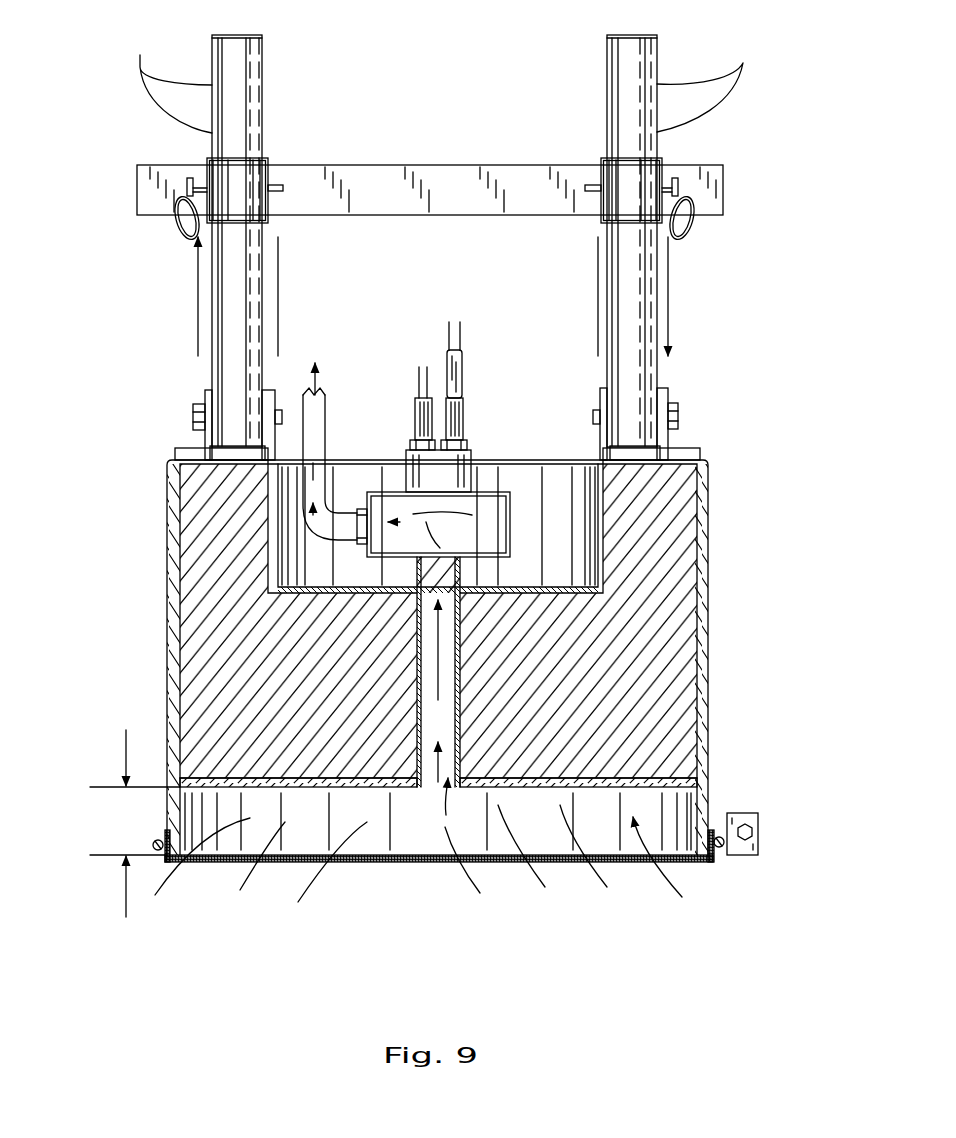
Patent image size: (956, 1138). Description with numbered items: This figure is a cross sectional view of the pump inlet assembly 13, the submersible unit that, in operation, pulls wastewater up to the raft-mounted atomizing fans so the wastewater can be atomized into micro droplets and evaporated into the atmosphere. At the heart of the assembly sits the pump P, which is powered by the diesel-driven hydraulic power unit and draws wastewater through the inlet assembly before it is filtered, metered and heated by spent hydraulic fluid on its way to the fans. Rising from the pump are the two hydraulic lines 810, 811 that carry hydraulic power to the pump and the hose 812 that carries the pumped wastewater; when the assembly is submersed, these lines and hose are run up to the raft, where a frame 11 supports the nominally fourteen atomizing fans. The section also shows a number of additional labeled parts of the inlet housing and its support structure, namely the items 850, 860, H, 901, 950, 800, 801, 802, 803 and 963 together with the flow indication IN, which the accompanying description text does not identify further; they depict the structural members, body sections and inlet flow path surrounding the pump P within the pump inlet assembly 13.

The pump inlet assembly 13 is at (101, 445).
The left support post 850 is at (248, 235).
The right support post 860 is at (548, 43).
The handle height H is at (172, 78).
The frame 11 is at (382, 205).
The locking ring pin 901 is at (190, 178).
The vertical motion direction 950 is at (198, 305).
The vessel housing 800 is at (708, 500).
The insulating body 801 is at (652, 632).
The bottom inlet plate 802 is at (552, 858).
The side fitting box 803 is at (740, 818).
The central flow channel 963 is at (417, 660).
The pump P is at (497, 470).
The hydraulic line 810 is at (453, 330).
The hydraulic line 811 is at (409, 346).
The hose 812 is at (316, 436).
The inlet flow IN is at (364, 909).